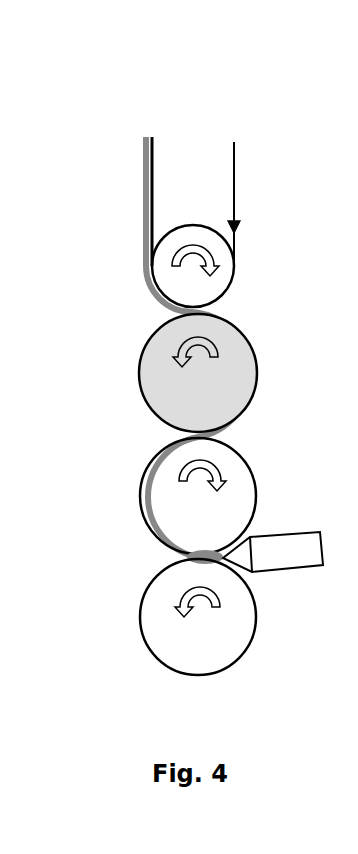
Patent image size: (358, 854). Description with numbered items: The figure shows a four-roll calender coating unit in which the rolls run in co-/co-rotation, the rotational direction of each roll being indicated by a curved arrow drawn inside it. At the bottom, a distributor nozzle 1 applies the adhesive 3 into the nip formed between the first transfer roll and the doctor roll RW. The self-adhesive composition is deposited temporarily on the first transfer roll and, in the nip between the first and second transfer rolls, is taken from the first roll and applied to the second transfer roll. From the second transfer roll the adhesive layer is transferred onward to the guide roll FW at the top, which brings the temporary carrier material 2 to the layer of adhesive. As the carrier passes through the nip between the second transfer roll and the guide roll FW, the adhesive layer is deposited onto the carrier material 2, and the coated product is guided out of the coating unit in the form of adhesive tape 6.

The distributor nozzle 1 is at (272, 543).
The temporary carrier material 2 is at (234, 163).
The adhesive 3 is at (163, 542).
The adhesive tape 6 is at (148, 170).
The guide roll FW is at (172, 277).
The doctor roll RW is at (187, 627).